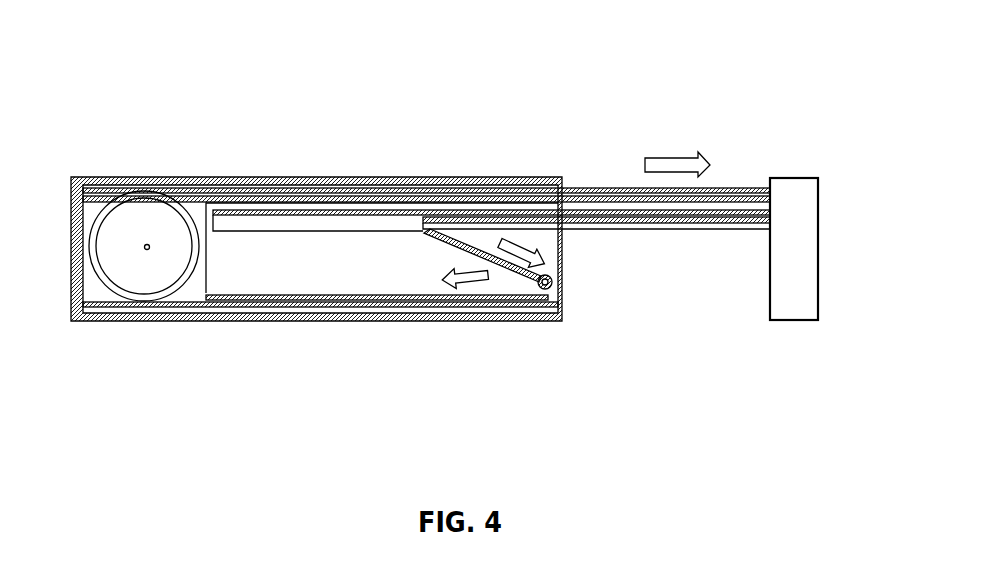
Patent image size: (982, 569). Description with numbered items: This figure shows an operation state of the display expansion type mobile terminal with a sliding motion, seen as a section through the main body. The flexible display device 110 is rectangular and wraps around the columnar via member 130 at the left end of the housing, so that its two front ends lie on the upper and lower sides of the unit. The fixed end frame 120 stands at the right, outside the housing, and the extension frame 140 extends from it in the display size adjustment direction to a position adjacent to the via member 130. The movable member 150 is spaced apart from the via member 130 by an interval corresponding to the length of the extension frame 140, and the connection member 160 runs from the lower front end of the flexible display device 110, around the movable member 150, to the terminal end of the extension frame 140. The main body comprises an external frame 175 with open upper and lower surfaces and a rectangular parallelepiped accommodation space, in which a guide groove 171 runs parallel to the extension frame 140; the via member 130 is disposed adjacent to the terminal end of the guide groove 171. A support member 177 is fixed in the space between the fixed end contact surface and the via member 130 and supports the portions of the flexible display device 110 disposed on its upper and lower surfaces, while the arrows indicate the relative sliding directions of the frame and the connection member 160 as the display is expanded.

The flexible display device 110 is at (170, 181).
The fixed end frame 120 is at (792, 195).
The via member 130 is at (139, 283).
The extension frame 140 is at (480, 217).
The movable member 150 is at (544, 291).
The connection member 160 is at (420, 297).
The guide groove 171 is at (312, 214).
The external frame 175 is at (78, 178).
The support member 177 is at (262, 267).